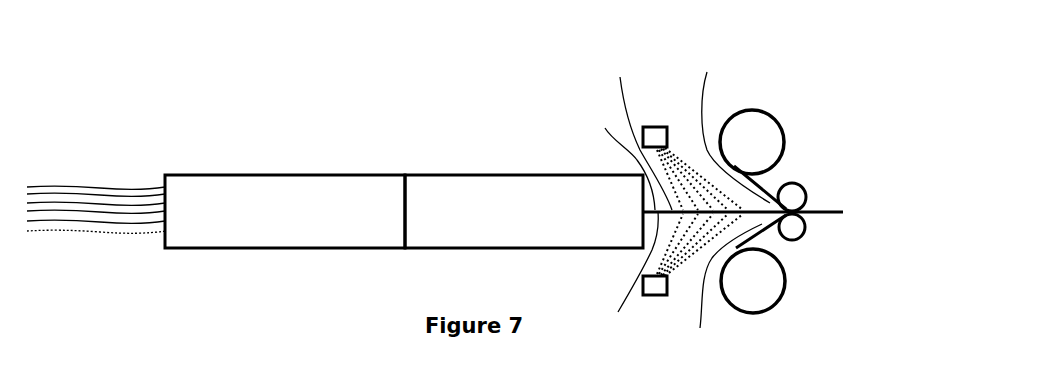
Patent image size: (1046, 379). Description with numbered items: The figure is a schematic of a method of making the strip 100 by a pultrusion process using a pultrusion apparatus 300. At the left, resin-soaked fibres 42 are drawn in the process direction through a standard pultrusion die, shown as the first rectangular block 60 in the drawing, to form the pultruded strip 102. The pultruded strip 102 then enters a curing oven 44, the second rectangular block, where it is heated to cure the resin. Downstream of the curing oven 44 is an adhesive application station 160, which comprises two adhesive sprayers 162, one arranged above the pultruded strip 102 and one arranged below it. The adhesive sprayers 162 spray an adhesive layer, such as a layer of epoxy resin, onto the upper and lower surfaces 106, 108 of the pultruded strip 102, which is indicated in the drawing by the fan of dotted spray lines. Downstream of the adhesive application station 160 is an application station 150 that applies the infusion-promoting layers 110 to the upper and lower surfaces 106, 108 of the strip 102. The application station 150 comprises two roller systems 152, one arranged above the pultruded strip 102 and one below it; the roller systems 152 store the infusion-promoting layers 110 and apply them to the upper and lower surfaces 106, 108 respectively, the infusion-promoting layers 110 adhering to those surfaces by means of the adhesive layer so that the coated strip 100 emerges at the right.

The pultrusion apparatus 300 is at (87, 66).
The resin-soaked fibres 42 is at (90, 200).
The impregnation unit 60 is at (268, 187).
The curing oven 44 is at (503, 188).
The strip 100 is at (836, 204).
The pultruded strip 102 is at (614, 162).
The upper surface 106 is at (641, 127).
The lower surface 108 is at (620, 278).
The infusion-promoting layers 110 is at (727, 197).
The adhesive application station 160 is at (670, 49).
The adhesive sprayers 162 is at (652, 315).
The application station 150 is at (788, 63).
The roller systems 152 is at (816, 121).